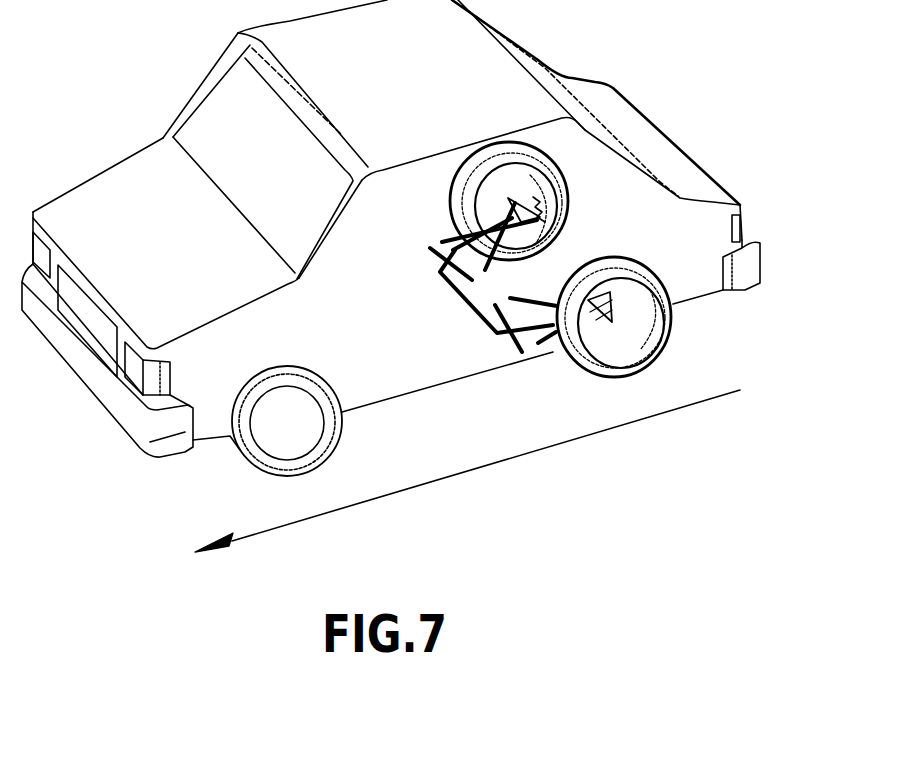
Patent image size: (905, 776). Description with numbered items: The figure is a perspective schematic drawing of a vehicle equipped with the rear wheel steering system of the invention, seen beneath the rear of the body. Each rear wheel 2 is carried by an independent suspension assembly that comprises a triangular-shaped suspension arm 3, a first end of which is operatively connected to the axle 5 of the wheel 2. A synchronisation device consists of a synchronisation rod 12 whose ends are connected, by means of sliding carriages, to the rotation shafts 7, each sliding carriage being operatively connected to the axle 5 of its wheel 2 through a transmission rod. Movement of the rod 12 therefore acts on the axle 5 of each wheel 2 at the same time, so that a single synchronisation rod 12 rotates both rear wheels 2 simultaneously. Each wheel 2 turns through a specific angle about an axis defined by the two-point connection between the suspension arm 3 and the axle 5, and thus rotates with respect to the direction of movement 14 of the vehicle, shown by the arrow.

The rear wheel 2 is at (497, 150).
The suspension arm 3 is at (533, 298).
The axle 5 is at (507, 213).
The rotation shaft 7 is at (433, 253).
The synchronisation rod 12 is at (465, 306).
The direction of movement 14 is at (417, 487).